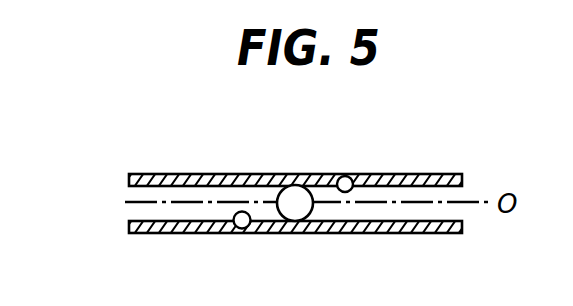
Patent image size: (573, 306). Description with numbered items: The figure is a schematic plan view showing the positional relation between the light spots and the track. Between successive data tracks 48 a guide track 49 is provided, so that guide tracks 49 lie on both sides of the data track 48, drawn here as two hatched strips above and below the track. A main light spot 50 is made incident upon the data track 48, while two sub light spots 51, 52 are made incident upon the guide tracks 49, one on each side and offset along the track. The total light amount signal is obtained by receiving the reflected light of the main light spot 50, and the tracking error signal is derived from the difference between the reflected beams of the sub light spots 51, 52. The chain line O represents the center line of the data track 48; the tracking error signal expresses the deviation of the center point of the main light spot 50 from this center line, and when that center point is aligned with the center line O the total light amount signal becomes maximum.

The data track 48 is at (132, 209).
The guide track 49 is at (207, 174).
The main light spot 50 is at (295, 210).
The sub light spot 51 is at (242, 229).
The sub light spot 52 is at (347, 177).